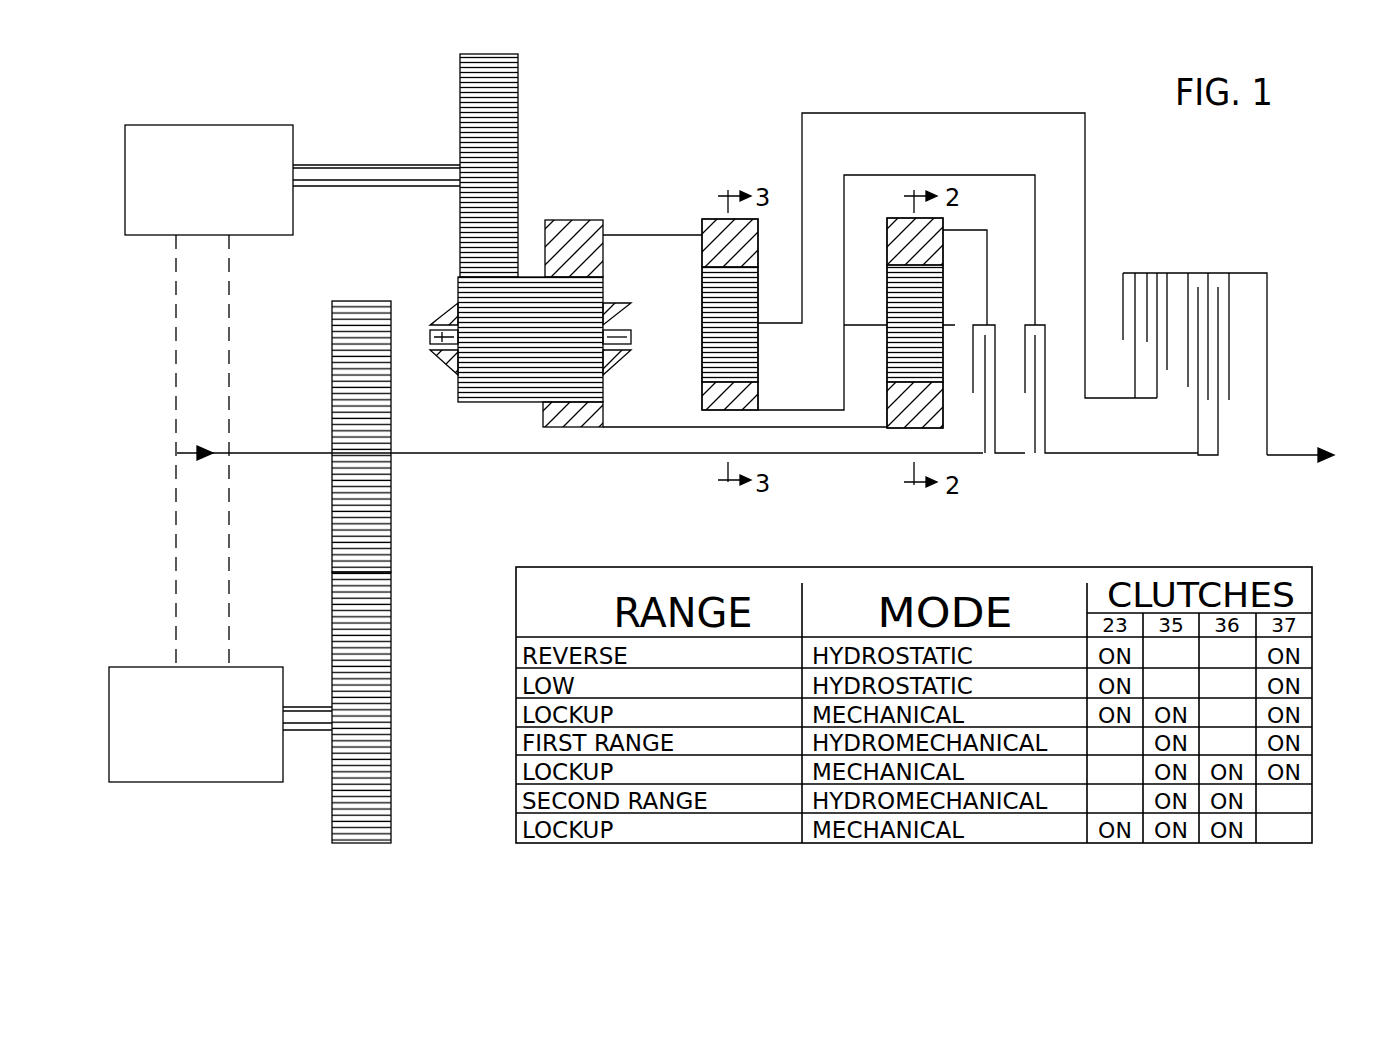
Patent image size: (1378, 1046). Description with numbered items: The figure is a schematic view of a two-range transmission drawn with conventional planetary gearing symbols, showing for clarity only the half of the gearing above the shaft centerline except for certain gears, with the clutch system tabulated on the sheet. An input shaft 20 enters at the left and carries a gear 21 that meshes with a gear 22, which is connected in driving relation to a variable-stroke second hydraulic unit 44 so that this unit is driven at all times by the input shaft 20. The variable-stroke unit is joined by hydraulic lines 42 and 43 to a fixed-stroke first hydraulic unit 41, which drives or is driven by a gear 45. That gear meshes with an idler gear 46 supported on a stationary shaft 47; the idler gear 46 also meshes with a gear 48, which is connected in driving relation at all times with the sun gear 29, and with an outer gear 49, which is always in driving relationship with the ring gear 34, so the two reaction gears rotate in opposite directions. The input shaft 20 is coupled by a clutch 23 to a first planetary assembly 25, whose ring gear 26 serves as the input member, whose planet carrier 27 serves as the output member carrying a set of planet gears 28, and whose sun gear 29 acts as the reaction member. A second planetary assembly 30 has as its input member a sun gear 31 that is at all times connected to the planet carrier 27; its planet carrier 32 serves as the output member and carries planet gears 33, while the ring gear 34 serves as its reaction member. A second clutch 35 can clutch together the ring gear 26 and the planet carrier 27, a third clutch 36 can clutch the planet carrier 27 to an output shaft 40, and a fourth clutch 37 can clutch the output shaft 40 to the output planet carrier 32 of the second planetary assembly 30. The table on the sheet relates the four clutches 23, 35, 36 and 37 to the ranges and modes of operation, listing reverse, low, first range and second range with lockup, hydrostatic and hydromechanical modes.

The input shaft 20 is at (190, 453).
The gear 21 is at (332, 392).
The gear 22 is at (391, 648).
The clutch 23 is at (990, 325).
The first planetary assembly 25 is at (954, 312).
The ring gear 26 is at (940, 256).
The planet carrier 27 is at (878, 325).
The planet gears 28 is at (940, 294).
The sun gear 29 is at (938, 405).
The second planetary assembly 30 is at (722, 295).
The sun gear 31 is at (752, 393).
The planet carrier 32 is at (770, 326).
The planet gears 33 is at (706, 346).
The ring gear 34 is at (706, 248).
The second clutch 35 is at (1040, 325).
The third clutch 36 is at (1198, 385).
The fourth clutch 37 is at (1133, 290).
The output shaft 40 is at (1298, 455).
The first hydraulic unit 41 is at (214, 125).
The hydraulic line 42 is at (172, 580).
The hydraulic line 43 is at (232, 572).
The second hydraulic unit 44 is at (153, 667).
The gear 45 is at (518, 118).
The idler gear 46 is at (466, 292).
The stationary shaft 47 is at (444, 340).
The gear 48 is at (545, 416).
The outer gear 49 is at (566, 222).